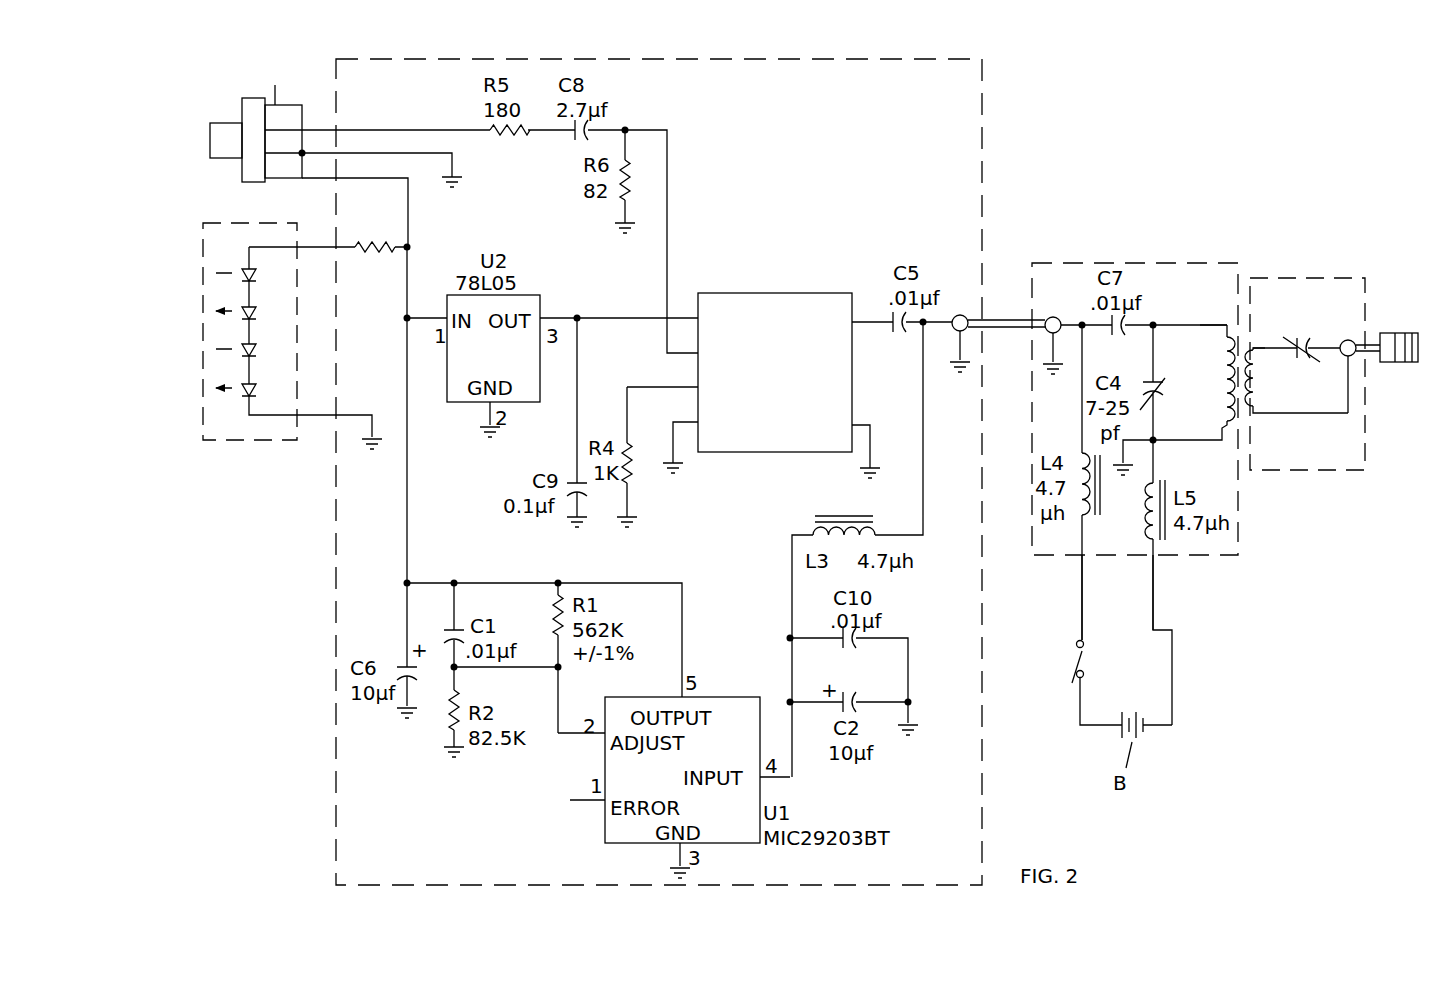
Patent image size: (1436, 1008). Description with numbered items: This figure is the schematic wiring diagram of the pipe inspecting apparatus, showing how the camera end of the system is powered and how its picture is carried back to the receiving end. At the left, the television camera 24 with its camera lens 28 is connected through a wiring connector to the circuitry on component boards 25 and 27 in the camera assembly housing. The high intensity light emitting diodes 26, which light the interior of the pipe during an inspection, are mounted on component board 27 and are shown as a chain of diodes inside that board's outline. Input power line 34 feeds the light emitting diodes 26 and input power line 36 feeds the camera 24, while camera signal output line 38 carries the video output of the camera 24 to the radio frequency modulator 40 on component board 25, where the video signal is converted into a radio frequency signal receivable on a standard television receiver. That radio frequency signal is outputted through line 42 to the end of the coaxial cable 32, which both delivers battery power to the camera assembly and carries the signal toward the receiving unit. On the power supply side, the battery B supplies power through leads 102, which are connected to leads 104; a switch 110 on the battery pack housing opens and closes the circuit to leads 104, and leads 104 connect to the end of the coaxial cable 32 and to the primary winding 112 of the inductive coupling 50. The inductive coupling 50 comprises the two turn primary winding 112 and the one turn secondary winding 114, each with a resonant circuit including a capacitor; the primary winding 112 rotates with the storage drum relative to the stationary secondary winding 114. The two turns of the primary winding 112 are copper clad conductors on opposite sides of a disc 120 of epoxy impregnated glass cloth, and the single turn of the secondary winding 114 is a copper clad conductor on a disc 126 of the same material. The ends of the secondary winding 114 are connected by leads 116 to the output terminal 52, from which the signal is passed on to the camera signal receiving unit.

The television camera 24 is at (244, 96).
The component board 25 is at (982, 133).
The light emitting diodes 26 is at (257, 311).
The component board 27 is at (230, 443).
The camera lens 28 is at (213, 137).
The coaxial cable 32 is at (995, 320).
The input power line 34 is at (345, 248).
The input power line 36 is at (323, 180).
The camera signal output line 38 is at (370, 130).
The radio frequency modulator 40 is at (763, 452).
The output line 42 is at (938, 327).
The inductive coupling 50 is at (1252, 417).
The output terminal 52 is at (1407, 332).
The leads 102 is at (1080, 603).
The leads 104 is at (1178, 325).
The switch 110 is at (1072, 663).
The primary winding 112 is at (1226, 322).
The secondary winding 114 is at (1262, 340).
The leads 116 is at (1328, 347).
The disc 120 is at (1073, 260).
The disc 126 is at (1318, 280).